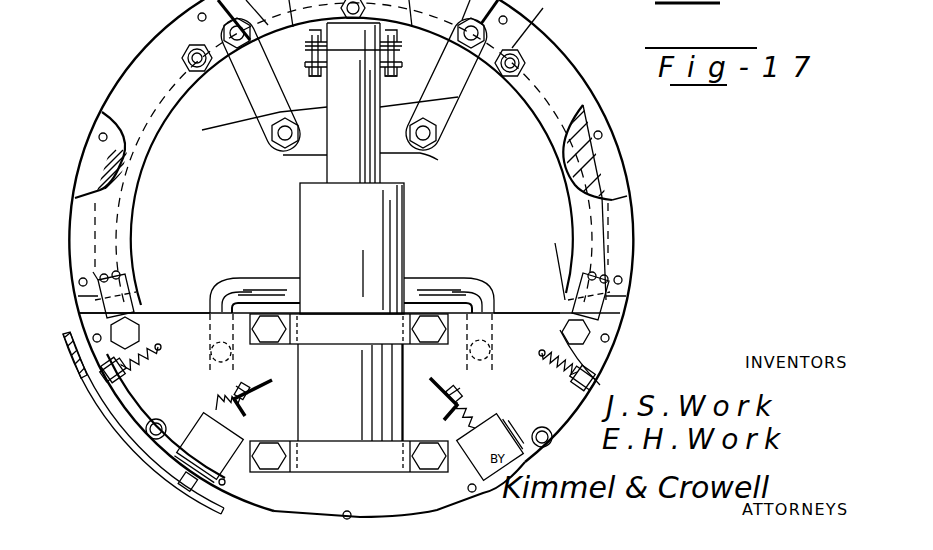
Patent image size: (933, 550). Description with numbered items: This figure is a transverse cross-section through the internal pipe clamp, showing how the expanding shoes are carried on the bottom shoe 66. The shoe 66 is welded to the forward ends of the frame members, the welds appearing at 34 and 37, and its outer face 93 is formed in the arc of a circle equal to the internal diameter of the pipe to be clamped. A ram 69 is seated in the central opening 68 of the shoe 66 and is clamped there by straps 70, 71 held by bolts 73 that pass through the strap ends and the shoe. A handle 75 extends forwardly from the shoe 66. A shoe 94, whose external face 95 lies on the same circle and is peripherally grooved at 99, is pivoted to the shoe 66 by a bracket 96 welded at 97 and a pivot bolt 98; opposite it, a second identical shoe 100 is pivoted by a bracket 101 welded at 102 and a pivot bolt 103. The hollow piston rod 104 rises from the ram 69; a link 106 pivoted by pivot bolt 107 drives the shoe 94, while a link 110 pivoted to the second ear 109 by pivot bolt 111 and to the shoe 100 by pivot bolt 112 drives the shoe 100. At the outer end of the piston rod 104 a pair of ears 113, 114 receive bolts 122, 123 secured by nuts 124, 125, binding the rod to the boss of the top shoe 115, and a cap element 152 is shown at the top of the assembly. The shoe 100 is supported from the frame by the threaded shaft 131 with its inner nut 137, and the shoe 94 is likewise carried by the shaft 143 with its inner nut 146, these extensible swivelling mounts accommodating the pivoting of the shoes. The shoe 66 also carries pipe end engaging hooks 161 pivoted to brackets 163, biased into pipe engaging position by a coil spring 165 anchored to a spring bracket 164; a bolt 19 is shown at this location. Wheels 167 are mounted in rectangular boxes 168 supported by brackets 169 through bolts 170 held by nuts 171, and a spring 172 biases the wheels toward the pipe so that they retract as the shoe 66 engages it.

The bolt 19 is at (175, 315).
The welding connection 34 is at (157, 419).
The welding connection 37 is at (541, 427).
The shoe 66 is at (512, 312).
The opening 68 is at (300, 362).
The ram 69 is at (404, 230).
The strap 70 is at (325, 440).
The strap 71 is at (368, 345).
The bolts 73 is at (288, 328).
The handle 75 is at (466, 278).
The outer face 93 is at (615, 350).
The shoe 94 is at (590, 170).
The external face 95 is at (627, 196).
The bracket 96 is at (546, 261).
The welding 97 is at (612, 262).
The pivot bolt 98 is at (592, 328).
The peripheral groove 99 is at (590, 105).
The second shoe 100 is at (160, 146).
The bracket 101 is at (132, 290).
The welding 102 is at (120, 275).
The pivot bolt 103 is at (400, 153).
The piston rod 104 is at (380, 102).
The link 106 is at (455, 80).
The pivot bolt 107 is at (438, 140).
The second ear 109 is at (292, 157).
The link 110 is at (255, 90).
The pivot bolt 111 is at (277, 150).
The pivot bolt 112 is at (255, 20).
The ear 113 is at (421, 59).
The ear 114 is at (304, 64).
The top shoe 115 is at (405, 22).
The bolt 122 is at (398, 76).
The bolt 123 is at (304, 86).
The nut 124 is at (407, 53).
The nut 125 is at (334, 53).
The threaded shaft 131 is at (118, 88).
The inner nut 137 is at (202, 74).
The shaft 143 is at (525, 55).
The inner nut 146 is at (540, 24).
The cap 152 is at (376, 13).
The pipe end engaging hooks 161 is at (125, 420).
The brackets 163 is at (646, 357).
The spring bracket 164 is at (160, 345).
The coil spring 165 is at (350, 363).
The wheels 167 is at (182, 486).
The rectangular box 168 is at (203, 425).
The brackets 169 is at (272, 383).
The bolts 170 is at (243, 384).
The nuts 171 is at (346, 385).
The spring 172 is at (345, 413).